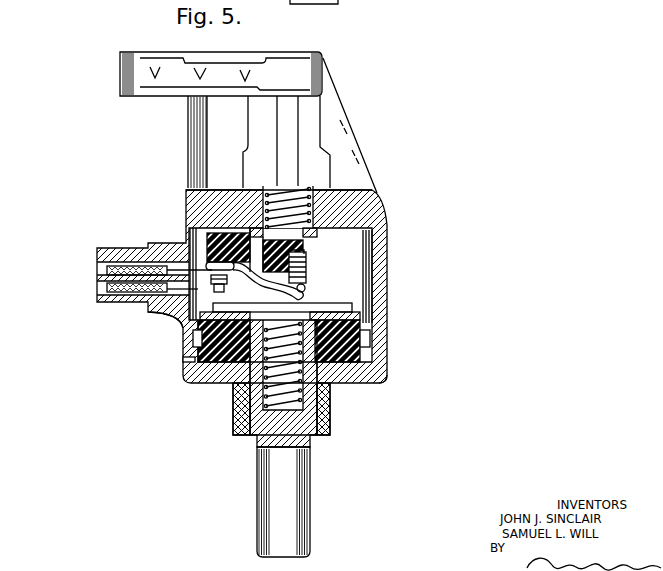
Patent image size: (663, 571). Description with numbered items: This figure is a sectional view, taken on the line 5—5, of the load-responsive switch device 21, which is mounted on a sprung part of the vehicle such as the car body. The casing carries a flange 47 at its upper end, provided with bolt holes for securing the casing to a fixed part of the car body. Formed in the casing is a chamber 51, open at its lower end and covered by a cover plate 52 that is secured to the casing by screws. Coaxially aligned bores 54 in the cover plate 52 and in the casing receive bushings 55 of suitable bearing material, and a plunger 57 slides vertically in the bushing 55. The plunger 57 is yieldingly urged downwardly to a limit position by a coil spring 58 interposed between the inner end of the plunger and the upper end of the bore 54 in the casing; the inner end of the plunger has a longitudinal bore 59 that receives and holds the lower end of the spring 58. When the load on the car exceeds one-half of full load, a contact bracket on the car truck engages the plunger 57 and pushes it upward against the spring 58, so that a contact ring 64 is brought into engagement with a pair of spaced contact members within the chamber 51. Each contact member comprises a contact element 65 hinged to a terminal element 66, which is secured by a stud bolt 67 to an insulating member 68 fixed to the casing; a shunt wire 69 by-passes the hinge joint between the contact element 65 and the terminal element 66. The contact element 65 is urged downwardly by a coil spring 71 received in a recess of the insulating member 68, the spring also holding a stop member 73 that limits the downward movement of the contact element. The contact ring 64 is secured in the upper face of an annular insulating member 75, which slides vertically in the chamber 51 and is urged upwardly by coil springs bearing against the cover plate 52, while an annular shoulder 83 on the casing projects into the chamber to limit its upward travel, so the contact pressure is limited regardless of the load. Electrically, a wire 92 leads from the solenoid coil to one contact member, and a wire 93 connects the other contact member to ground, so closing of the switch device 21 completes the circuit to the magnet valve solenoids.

The section line 5 is at (299, 21).
The load-responsive switch device 21 is at (349, 89).
The flange 47 is at (136, 73).
The chamber 51 is at (352, 295).
The cover plate 52 is at (376, 372).
The bores 54 is at (188, 208).
The bushings 55 is at (188, 193).
The plunger 57 is at (293, 488).
The coil spring 58 is at (267, 396).
The longitudinal bore 59 is at (370, 195).
The contact ring 64 is at (353, 313).
The contact element 65 is at (300, 298).
The terminal element 66 is at (208, 252).
The stud bolt 67 is at (218, 292).
The insulating member 68 is at (300, 243).
The shunt wire 69 is at (253, 290).
The coil spring 71 is at (306, 262).
The stop member 73 is at (305, 288).
The annular insulating member 75 is at (193, 356).
The annular shoulder 83 is at (368, 335).
The wire 92 is at (107, 270).
The wire 93 is at (107, 289).